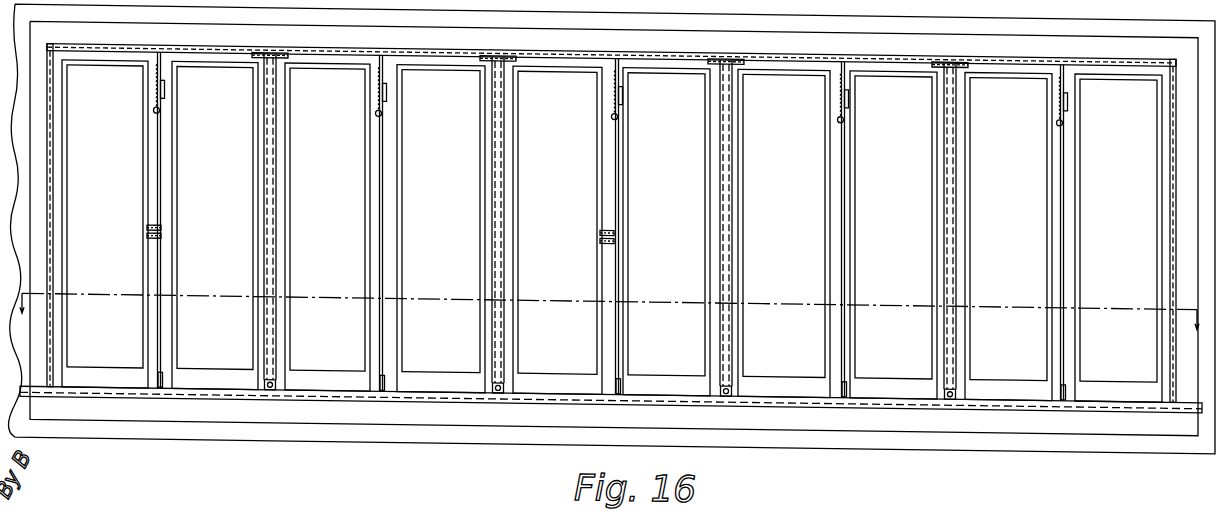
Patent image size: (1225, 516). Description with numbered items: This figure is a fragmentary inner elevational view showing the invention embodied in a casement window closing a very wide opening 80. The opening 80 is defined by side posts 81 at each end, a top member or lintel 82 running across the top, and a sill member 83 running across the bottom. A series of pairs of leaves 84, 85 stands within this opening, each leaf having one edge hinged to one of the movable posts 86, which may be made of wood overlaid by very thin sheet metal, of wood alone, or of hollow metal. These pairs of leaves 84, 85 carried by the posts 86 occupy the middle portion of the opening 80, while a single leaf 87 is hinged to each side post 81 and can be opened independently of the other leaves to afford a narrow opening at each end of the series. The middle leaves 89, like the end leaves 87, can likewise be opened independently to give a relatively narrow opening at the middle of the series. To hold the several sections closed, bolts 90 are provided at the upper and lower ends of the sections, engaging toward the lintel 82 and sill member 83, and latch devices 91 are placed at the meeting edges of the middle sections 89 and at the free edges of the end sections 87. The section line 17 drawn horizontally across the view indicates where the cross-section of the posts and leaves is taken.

The section line 17- 17 is at (616, 298).
The wide opening 80 is at (53, 185).
The side posts 81 is at (38, 230).
The top member or lintel 82 is at (543, 42).
The sill member 83 is at (776, 396).
The leaf 84 is at (222, 356).
The leaf 85 is at (318, 356).
The movable post 86 is at (277, 238).
The single leaf 87 is at (125, 355).
The middle leaves 89 is at (558, 356).
The bolt 90 is at (170, 70).
The latch device 91 is at (161, 229).